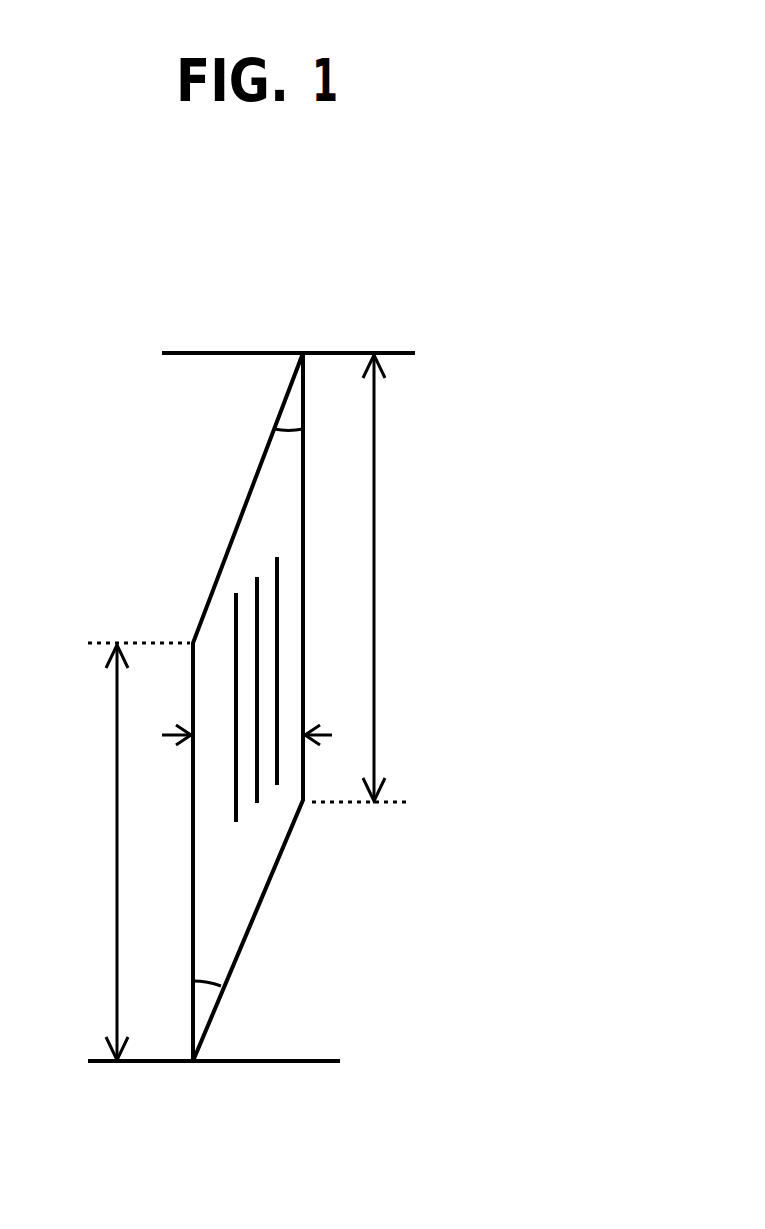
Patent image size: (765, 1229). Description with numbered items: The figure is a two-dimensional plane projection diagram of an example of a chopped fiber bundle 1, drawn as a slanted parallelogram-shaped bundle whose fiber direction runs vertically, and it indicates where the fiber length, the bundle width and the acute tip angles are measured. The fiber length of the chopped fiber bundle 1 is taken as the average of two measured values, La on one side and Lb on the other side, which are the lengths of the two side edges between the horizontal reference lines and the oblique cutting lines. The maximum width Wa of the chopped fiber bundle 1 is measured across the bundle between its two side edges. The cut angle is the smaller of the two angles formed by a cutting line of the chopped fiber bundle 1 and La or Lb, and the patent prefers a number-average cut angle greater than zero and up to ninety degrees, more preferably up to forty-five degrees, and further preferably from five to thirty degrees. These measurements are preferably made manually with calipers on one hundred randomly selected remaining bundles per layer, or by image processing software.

The chopped fiber bundle [A] 1 is at (274, 531).
The fiber length measurement point La is at (90, 852).
The fiber length measurement point Lb is at (396, 578).
The maximum width Wa is at (232, 714).